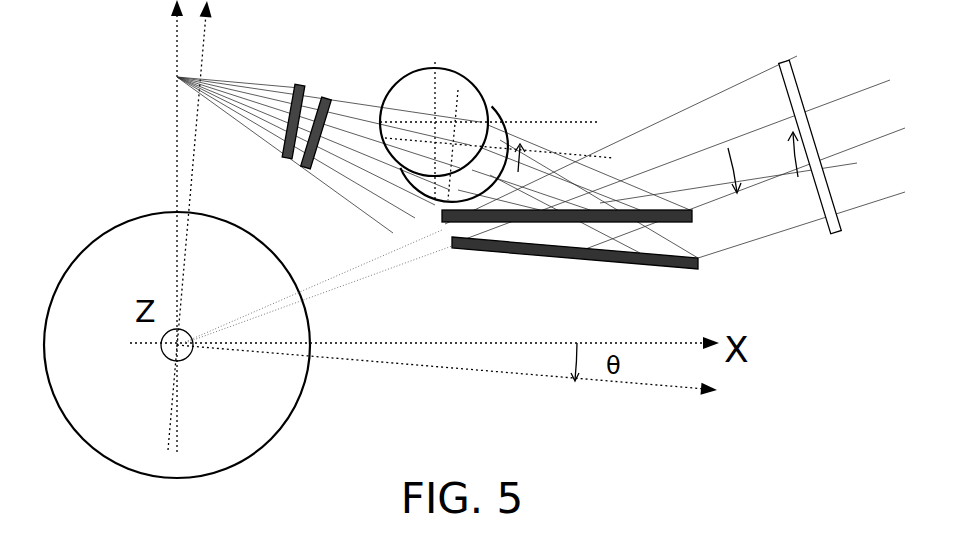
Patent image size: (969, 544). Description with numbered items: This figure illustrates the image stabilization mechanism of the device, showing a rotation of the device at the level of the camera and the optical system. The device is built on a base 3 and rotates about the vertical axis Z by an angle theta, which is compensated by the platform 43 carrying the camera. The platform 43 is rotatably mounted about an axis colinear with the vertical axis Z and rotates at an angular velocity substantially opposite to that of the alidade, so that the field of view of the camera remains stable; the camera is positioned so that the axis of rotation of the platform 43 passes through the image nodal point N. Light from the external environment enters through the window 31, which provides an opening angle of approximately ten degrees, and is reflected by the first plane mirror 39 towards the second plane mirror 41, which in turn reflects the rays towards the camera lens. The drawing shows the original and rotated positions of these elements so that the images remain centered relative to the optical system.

The base 3 is at (177, 345).
The first plane mirror 39 is at (305, 107).
The platform 43 is at (463, 115).
The second plane mirror 41 is at (570, 256).
The window 31 is at (798, 146).